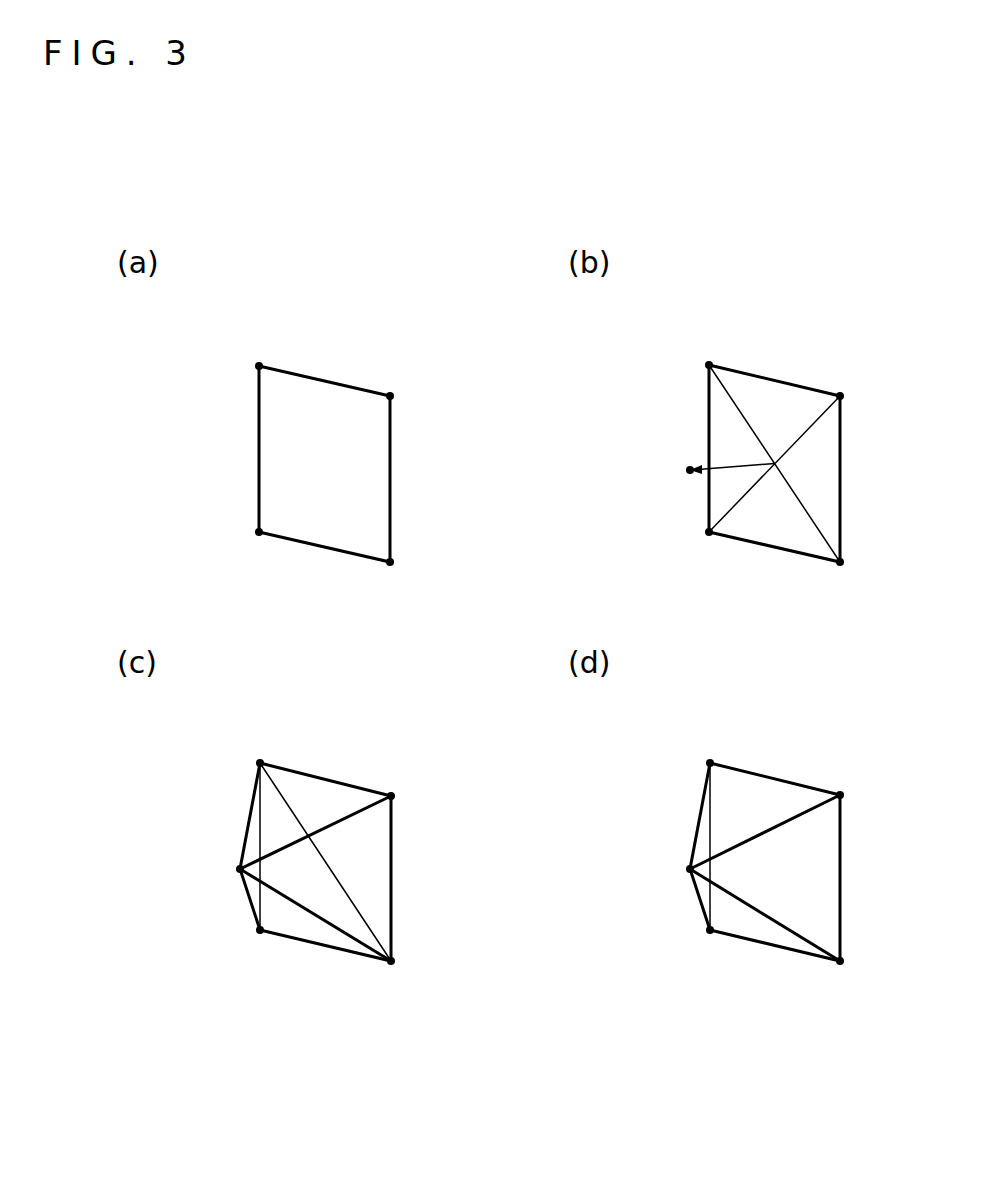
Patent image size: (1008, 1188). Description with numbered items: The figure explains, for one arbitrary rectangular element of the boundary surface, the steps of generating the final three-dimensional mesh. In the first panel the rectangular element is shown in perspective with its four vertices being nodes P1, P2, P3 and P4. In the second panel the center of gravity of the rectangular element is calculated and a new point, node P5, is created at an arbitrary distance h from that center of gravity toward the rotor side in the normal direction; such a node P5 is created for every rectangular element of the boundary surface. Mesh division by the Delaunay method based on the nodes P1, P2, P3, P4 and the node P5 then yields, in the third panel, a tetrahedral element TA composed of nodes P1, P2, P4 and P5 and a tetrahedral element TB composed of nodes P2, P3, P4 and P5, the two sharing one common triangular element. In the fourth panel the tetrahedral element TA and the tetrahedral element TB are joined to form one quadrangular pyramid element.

The node P1 is at (458, 730).
The node P2 is at (642, 761).
The node P3 is at (642, 595).
The node P4 is at (458, 564).
The node P5 is at (438, 669).
The distance h is at (732, 453).
The tetrahedral element TA is at (305, 932).
The tetrahedral element TB is at (378, 865).